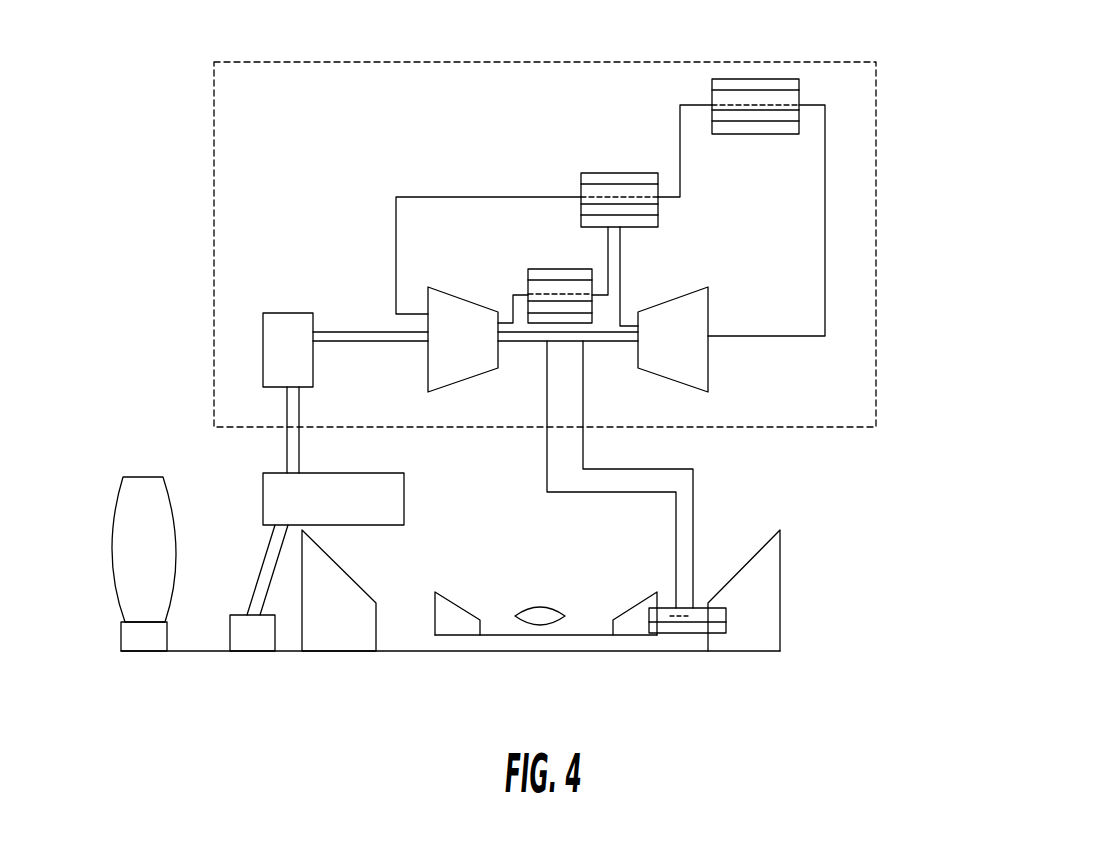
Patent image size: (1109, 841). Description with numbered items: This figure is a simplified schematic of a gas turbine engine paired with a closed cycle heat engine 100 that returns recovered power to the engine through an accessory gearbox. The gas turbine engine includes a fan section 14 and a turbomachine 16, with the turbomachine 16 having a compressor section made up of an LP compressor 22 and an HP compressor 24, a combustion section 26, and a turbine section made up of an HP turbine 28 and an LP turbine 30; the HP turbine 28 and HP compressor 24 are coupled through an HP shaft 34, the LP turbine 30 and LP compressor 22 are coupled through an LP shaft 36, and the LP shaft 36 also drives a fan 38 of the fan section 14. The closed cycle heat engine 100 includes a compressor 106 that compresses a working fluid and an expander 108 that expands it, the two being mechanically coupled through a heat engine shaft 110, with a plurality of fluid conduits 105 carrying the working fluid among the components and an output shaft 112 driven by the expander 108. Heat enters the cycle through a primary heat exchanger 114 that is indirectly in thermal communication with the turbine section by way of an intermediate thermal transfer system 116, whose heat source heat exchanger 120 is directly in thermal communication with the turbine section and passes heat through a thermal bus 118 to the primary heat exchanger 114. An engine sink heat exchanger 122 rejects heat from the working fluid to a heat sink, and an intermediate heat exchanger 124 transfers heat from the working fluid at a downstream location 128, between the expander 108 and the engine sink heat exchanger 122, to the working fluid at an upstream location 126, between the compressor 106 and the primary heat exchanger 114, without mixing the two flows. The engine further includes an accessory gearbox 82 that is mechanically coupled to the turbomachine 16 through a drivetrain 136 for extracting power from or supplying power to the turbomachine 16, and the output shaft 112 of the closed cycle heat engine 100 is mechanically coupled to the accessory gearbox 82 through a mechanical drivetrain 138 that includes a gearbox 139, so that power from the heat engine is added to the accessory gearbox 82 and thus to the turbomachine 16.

The fan section 14 is at (92, 430).
The turbomachine 16 is at (465, 469).
The LP compressor 22 is at (339, 590).
The HP compressor 24 is at (457, 589).
The combustion section 26 is at (555, 588).
The HP turbine 28 is at (628, 649).
The LP turbine 30 is at (777, 590).
The HP shaft 34 is at (546, 675).
The LP shaft 36 is at (450, 690).
The fan 38 is at (125, 563).
The accessory gearbox 82 is at (333, 499).
The closed cycle heat engine 100 is at (572, 228).
The fluid conduits 105 is at (631, 220).
The compressor 106 is at (673, 339).
The expander 108 is at (463, 339).
The heat engine shaft 110 is at (571, 373).
The output shaft 112 is at (370, 374).
The primary heat exchanger 114 is at (556, 260).
The intermediate thermal transfer system 116 is at (691, 474).
The thermal bus 118 is at (600, 474).
The heat source heat exchanger 120 is at (687, 660).
The engine sink heat exchanger 122 is at (755, 72).
The intermediate heat exchanger 124 is at (619, 164).
The upstream location 126 is at (669, 251).
The downstream location 128 is at (529, 160).
The drivetrain 136 is at (235, 588).
The mechanical drivetrain 138 is at (249, 430).
The gearbox 139 is at (279, 314).